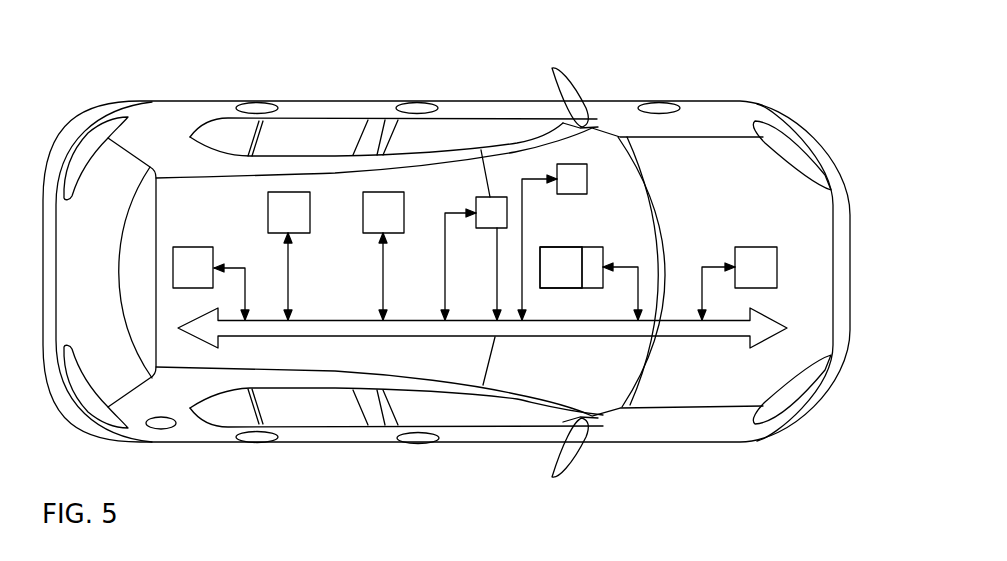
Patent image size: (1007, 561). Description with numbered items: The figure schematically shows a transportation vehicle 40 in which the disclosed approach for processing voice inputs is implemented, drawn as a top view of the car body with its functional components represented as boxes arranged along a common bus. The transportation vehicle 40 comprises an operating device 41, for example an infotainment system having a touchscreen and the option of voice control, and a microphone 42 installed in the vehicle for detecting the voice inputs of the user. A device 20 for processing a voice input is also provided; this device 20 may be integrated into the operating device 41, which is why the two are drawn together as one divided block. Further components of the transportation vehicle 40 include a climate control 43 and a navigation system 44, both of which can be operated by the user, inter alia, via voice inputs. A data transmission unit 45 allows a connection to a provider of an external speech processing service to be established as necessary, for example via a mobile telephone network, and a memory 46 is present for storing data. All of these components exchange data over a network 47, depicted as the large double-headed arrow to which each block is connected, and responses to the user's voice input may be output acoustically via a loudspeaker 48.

The transportation vehicle 40 is at (717, 100).
The operating device 41 is at (563, 288).
The device for processing a voice input 20 is at (594, 247).
The microphone 42 is at (483, 198).
The climate control 43 is at (755, 247).
The navigation system 44 is at (368, 192).
The data transmission unit 45 is at (277, 193).
The memory 46 is at (192, 246).
The network 47 is at (317, 336).
The loudspeaker 48 is at (565, 164).